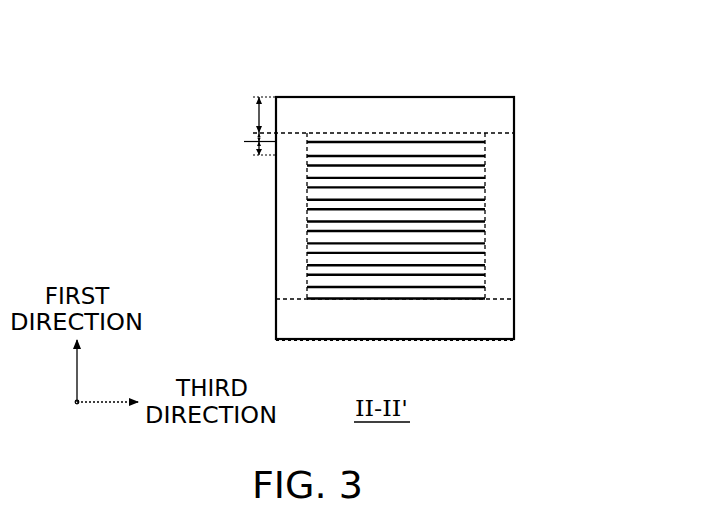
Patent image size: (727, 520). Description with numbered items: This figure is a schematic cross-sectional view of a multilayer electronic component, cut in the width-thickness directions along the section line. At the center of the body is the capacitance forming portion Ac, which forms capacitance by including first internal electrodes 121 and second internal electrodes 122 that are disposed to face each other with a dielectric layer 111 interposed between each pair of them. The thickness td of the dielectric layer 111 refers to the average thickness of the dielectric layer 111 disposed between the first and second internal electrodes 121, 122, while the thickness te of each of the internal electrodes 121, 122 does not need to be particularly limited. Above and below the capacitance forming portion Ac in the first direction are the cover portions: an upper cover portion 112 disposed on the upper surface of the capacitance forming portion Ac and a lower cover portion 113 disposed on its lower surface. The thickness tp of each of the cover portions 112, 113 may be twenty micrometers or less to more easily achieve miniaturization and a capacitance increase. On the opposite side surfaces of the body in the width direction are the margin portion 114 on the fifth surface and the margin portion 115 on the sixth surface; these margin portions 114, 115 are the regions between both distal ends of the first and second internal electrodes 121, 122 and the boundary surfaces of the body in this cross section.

The upper cover portion 112 is at (401, 110).
The first internal electrode 121 is at (483, 134).
The dielectric layer 111 is at (483, 147).
The second internal electrode 122 is at (483, 160).
The margin portion 115 is at (507, 242).
The lower cover portion 113 is at (507, 316).
The margin portion 114 is at (293, 255).
The capacitance forming portion Ac is at (304, 218).
The thickness of cover portion tp is at (254, 126).
The thickness of internal electrode te is at (257, 140).
The thickness of dielectric layer td is at (257, 149).